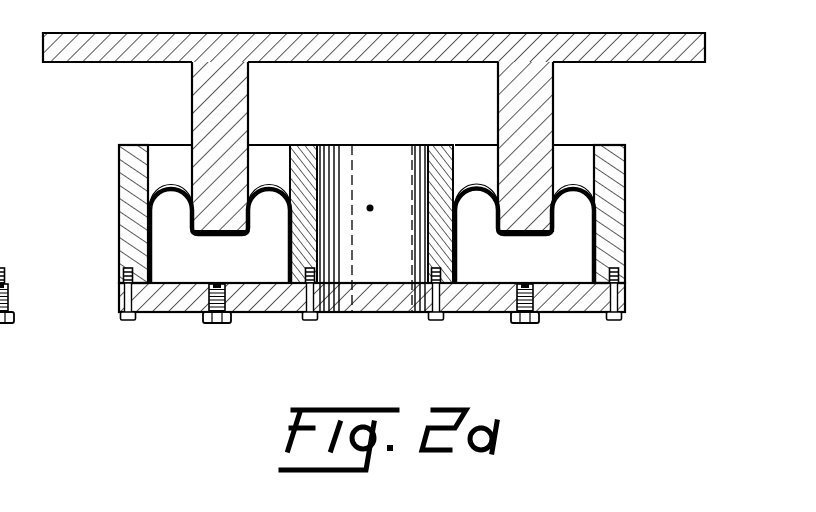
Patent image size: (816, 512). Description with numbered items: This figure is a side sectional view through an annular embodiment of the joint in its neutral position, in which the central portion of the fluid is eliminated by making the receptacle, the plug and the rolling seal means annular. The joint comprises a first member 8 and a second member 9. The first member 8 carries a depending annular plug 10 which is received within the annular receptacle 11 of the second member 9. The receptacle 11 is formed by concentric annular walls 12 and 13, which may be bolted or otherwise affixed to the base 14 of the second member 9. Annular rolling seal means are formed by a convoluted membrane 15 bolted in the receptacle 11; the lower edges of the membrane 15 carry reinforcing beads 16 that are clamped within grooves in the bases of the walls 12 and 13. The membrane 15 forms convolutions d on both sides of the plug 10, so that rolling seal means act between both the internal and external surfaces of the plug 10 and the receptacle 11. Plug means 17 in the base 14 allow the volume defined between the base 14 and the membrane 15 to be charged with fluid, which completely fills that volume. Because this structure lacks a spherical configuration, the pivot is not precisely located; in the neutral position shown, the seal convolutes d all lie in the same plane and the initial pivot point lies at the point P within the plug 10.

The first member 8 is at (403, 33).
The second member 9 is at (627, 265).
The depending annular plug 10 is at (535, 137).
The annular receptacle 11 is at (266, 158).
The annular wall 12 is at (119, 223).
The annular wall 13 is at (382, 241).
The base 14 is at (561, 319).
The convoluted membrane 15 is at (530, 241).
The reinforcing beads 16 is at (140, 282).
The plug means 17 is at (222, 324).
The pivot point P is at (377, 199).
The convolutions d is at (160, 196).